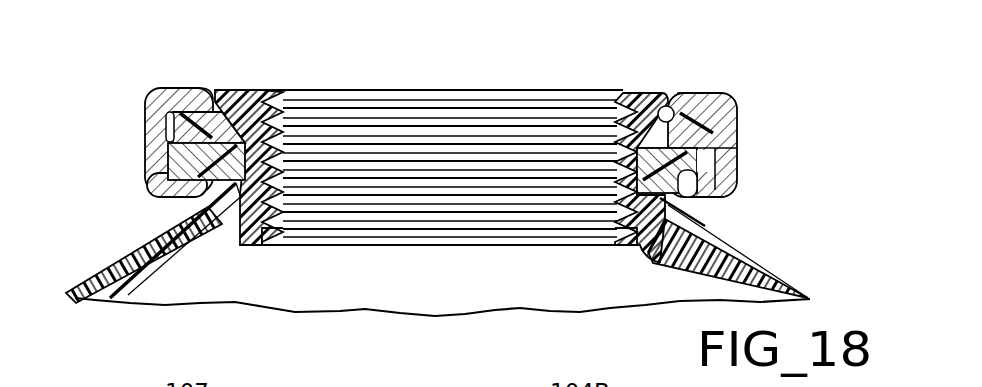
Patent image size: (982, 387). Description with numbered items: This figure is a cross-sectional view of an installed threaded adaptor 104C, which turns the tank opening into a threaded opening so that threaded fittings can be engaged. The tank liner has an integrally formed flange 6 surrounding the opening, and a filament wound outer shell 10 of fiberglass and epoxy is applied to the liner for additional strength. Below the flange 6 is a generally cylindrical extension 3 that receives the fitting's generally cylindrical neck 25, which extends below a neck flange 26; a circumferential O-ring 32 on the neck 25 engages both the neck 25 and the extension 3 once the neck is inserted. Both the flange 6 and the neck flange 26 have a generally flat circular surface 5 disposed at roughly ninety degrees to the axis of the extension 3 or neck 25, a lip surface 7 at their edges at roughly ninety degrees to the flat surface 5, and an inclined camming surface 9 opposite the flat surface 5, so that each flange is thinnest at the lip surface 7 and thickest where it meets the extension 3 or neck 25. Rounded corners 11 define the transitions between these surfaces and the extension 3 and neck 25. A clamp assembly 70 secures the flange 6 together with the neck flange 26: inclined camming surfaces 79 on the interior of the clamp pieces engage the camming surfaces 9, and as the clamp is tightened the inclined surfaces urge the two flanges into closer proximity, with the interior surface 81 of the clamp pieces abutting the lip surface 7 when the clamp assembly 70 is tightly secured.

The threaded adaptor 104C is at (427, 87).
The flat circular surface 5 is at (222, 120).
The cylindrical extension 3 is at (227, 212).
The neck 25 is at (268, 150).
The circumferential O-ring 32 is at (627, 236).
The clamp assembly 70 is at (148, 118).
The neck flange 26 is at (176, 97).
The inclined camming surface 9 is at (197, 100).
The flange 6 is at (190, 165).
The interior surface 81 is at (170, 136).
The filament wound outer shell 10 is at (126, 252).
The lip surface 7 is at (718, 138).
The inclined camming surface 79 is at (643, 93).
The rounded corners 11 is at (668, 213).